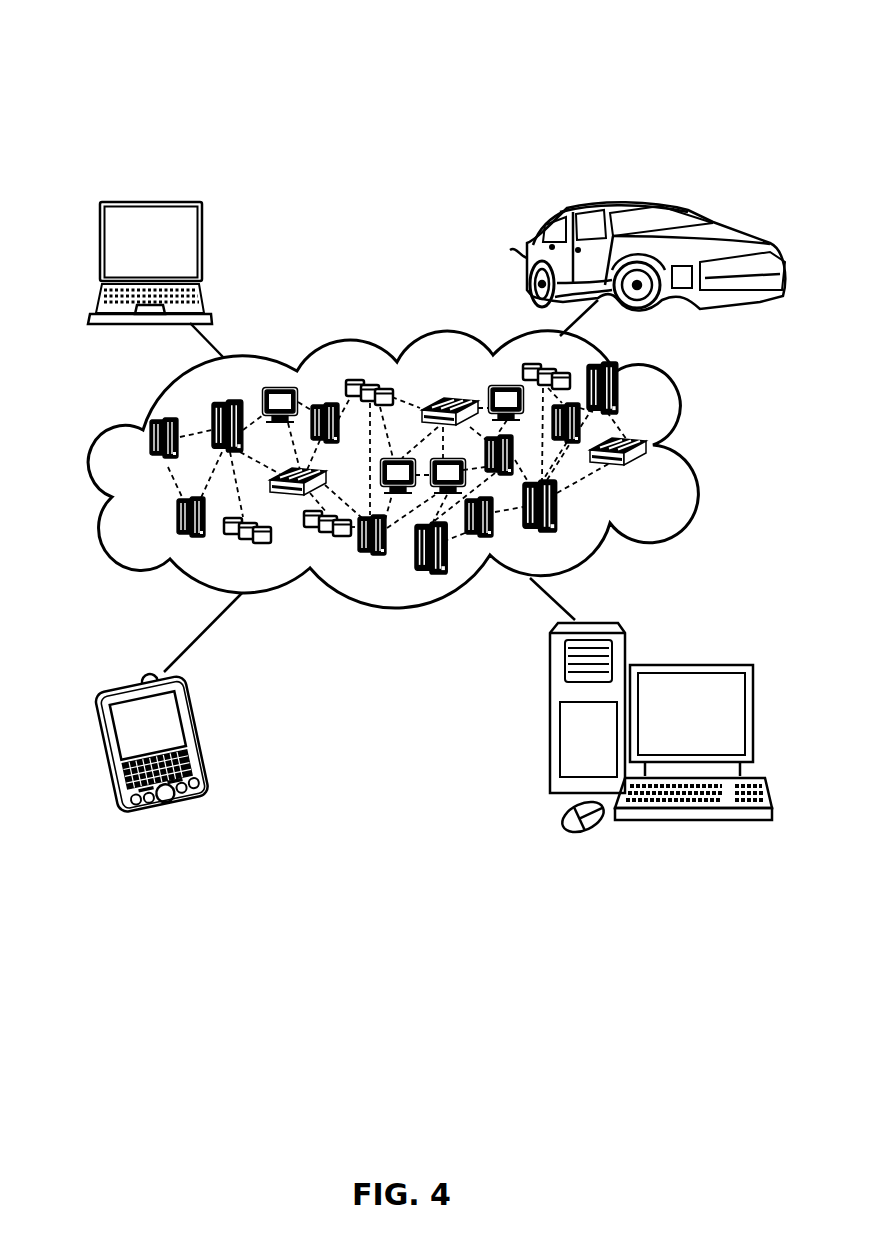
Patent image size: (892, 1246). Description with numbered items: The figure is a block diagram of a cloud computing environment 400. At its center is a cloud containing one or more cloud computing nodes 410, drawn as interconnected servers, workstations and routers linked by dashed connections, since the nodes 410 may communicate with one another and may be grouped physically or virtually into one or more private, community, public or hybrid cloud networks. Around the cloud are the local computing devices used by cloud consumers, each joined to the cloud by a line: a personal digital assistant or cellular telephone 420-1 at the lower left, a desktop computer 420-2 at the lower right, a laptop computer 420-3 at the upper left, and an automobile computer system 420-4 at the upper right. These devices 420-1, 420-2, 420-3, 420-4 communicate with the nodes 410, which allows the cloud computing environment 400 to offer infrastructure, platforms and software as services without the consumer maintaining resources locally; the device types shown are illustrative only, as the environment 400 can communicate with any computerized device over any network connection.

The cloud computing environment 400 is at (331, 63).
The cloud computing nodes 410 is at (655, 477).
The personal digital assistant (PDA) or cellular telephone 420-1 is at (195, 736).
The desktop computer 420-2 is at (692, 664).
The laptop computer 420-3 is at (204, 248).
The automobile computer system 420-4 is at (517, 255).